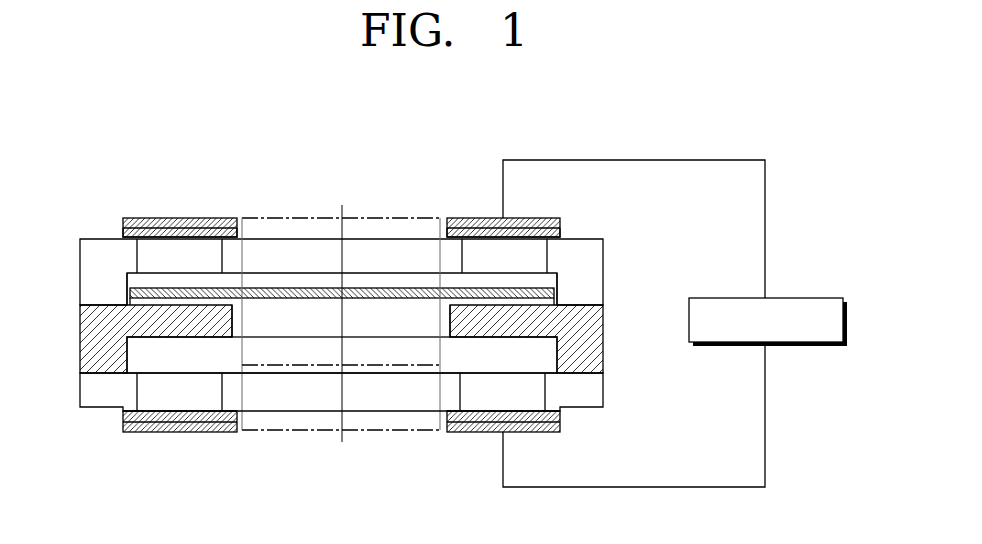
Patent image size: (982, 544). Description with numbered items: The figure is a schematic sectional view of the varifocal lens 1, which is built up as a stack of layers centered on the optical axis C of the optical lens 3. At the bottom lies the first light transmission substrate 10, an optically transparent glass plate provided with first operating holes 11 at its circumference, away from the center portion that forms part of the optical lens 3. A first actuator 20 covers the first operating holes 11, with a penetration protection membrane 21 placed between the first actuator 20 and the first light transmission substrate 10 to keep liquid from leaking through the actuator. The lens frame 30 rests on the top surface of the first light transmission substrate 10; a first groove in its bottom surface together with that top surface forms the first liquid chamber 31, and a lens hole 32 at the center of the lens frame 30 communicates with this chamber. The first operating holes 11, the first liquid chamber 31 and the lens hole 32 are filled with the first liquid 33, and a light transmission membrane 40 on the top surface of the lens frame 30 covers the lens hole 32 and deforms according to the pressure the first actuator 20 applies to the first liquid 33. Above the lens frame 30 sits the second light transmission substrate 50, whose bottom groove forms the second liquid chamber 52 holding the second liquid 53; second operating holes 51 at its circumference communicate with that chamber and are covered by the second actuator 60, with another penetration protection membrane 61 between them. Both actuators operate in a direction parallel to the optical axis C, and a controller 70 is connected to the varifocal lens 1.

The varifocal lens 1 is at (513, 142).
The optical lens 3 is at (423, 217).
The optical axis C is at (342, 228).
The first light transmission substrate 10 is at (602, 390).
The first operating hole 11 is at (222, 398).
The first actuator 20 is at (130, 432).
The penetration protection membrane 21 is at (124, 415).
The lens frame 30 is at (597, 333).
The first liquid chamber 31 is at (558, 366).
The lens hole 32 is at (450, 318).
The first liquid 33 is at (307, 368).
The light transmission membrane 40 is at (533, 288).
The second light transmission substrate 50 is at (602, 272).
The second operating hole 51 is at (138, 268).
The second liquid chamber 52 is at (129, 282).
The second liquid 53 is at (306, 276).
The second actuator 60 is at (131, 218).
The penetration protection membrane 61 is at (124, 231).
The controller 70 is at (805, 297).